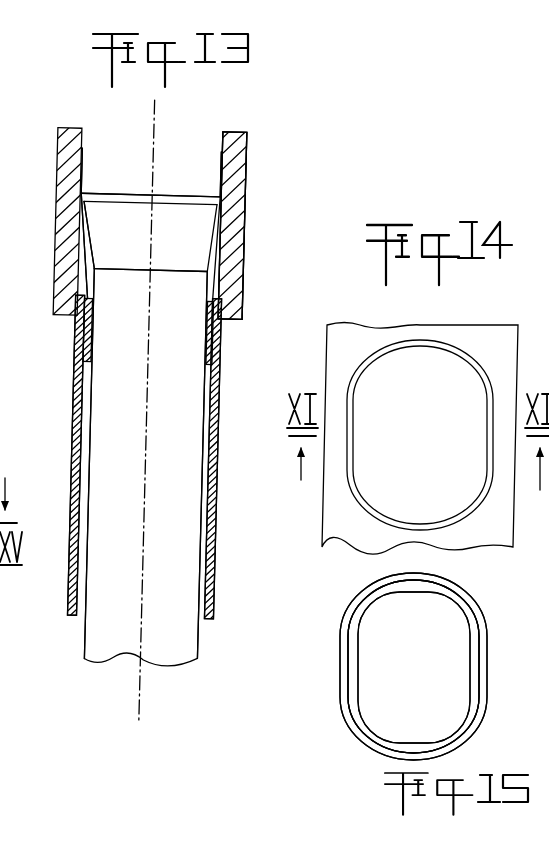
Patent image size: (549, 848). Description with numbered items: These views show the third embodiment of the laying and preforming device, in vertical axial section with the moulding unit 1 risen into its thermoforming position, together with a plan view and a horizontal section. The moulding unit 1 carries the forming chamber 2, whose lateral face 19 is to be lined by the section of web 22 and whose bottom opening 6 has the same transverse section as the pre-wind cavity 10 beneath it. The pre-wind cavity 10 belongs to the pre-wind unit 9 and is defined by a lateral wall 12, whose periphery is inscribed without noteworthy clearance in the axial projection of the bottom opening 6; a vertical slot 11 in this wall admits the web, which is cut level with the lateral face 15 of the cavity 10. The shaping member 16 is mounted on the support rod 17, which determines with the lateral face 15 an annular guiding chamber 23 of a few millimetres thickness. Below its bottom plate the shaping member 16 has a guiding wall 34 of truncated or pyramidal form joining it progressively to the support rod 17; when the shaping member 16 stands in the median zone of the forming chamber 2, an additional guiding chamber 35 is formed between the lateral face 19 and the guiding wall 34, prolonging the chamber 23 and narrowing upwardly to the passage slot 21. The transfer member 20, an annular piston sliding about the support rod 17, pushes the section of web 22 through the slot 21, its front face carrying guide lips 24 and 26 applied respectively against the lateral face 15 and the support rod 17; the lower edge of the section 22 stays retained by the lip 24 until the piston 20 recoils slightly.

In FIG. 13, the moulding unit 1 is at (247, 190).
In FIG. 14, the moulding unit 1 is at (487, 345).
In FIG. 13, the forming chamber 2 is at (135, 163).
In FIG. 14, the forming chamber 2 is at (422, 416).
In FIG. 14, the bottom opening 6 is at (450, 348).
In FIG. 15, the pre-wind unit 9 is at (491, 638).
In FIG. 13, the pre-wind cavity 10 is at (169, 424).
In FIG. 15, the pre-wind cavity 10 is at (360, 724).
In FIG. 15, the vertical slot 11 is at (342, 637).
In FIG. 13, the lateral wall 12 is at (76, 620).
In FIG. 15, the lateral wall 12 is at (373, 746).
In FIG. 15, the lateral face 15 is at (377, 605).
In FIG. 13, the shaping member 16 is at (168, 193).
In FIG. 13, the support rod 17 is at (110, 655).
In FIG. 15, the support rod 17 is at (437, 679).
In FIG. 13, the lateral face 19 is at (87, 132).
In FIG. 14, the lateral face 19 is at (458, 514).
In FIG. 13, the transfer member 20 is at (218, 346).
In FIG. 13, the slot 21 is at (80, 198).
In FIG. 13, the section of web 22 is at (224, 163).
In FIG. 13, the annular chamber 23 is at (212, 405).
In FIG. 13, the guide lip 24 is at (220, 302).
In FIG. 13, the guide lip 26 is at (212, 301).
In FIG. 13, the guiding wall 34 is at (200, 236).
In FIG. 13, the additional guiding chamber 35 is at (87, 283).